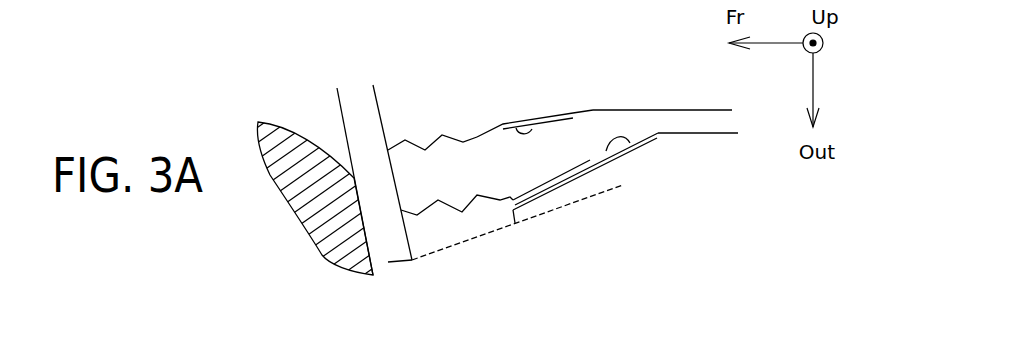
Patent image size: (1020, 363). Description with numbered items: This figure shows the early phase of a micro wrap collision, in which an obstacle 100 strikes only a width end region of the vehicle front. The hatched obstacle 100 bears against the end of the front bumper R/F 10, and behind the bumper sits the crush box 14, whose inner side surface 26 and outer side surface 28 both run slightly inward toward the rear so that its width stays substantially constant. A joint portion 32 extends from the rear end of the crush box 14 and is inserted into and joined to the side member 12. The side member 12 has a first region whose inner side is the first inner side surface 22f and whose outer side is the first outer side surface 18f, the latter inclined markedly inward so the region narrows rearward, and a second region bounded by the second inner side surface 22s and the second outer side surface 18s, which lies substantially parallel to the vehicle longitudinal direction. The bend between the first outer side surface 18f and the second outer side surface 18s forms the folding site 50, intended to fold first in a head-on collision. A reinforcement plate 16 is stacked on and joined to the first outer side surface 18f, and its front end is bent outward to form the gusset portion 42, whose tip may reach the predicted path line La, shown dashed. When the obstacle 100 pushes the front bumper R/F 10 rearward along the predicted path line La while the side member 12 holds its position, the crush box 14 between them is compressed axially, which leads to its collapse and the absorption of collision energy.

The obstacle 100 is at (272, 122).
The front bumper R/F 10 is at (338, 100).
The side member 12 is at (620, 97).
The crush box 14 is at (413, 128).
The reinforcement plate 16 is at (573, 184).
The first outer side surface 18f is at (633, 146).
The second outer side surface 18s is at (719, 134).
The first inner side surface 22f is at (573, 112).
The second inner side surface 22s is at (677, 110).
The inner side surface 26 is at (442, 135).
The outer side surface 28 is at (438, 210).
The joint portion 32 is at (517, 128).
The gusset portion 42 is at (514, 223).
The folding site 50 is at (663, 140).
The predicted path line La is at (541, 218).